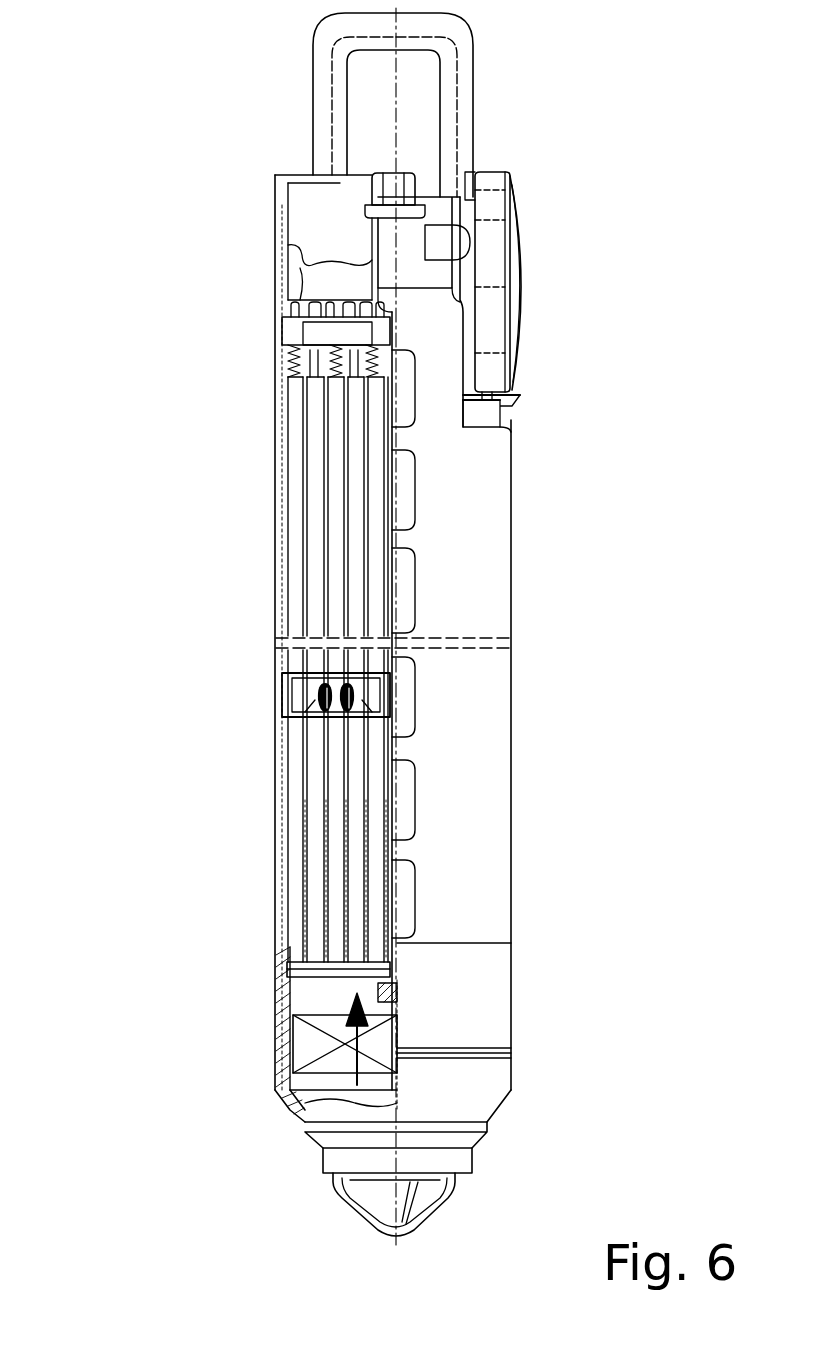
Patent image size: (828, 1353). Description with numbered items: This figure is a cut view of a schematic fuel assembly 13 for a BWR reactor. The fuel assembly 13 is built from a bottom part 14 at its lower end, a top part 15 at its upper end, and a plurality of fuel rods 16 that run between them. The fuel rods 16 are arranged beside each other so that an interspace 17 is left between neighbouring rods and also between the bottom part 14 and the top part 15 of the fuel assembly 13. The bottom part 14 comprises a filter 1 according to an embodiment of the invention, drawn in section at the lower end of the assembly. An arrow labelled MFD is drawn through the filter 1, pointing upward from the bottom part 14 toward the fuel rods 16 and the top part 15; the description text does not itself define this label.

The filter 1 is at (305, 1027).
The fuel assembly 13 is at (208, 517).
The bottom part 14 is at (528, 1015).
The top part 15 is at (527, 460).
The fuel rods 16 is at (313, 787).
The interspace 17 is at (329, 897).
The main flow direction MFD is at (310, 1053).